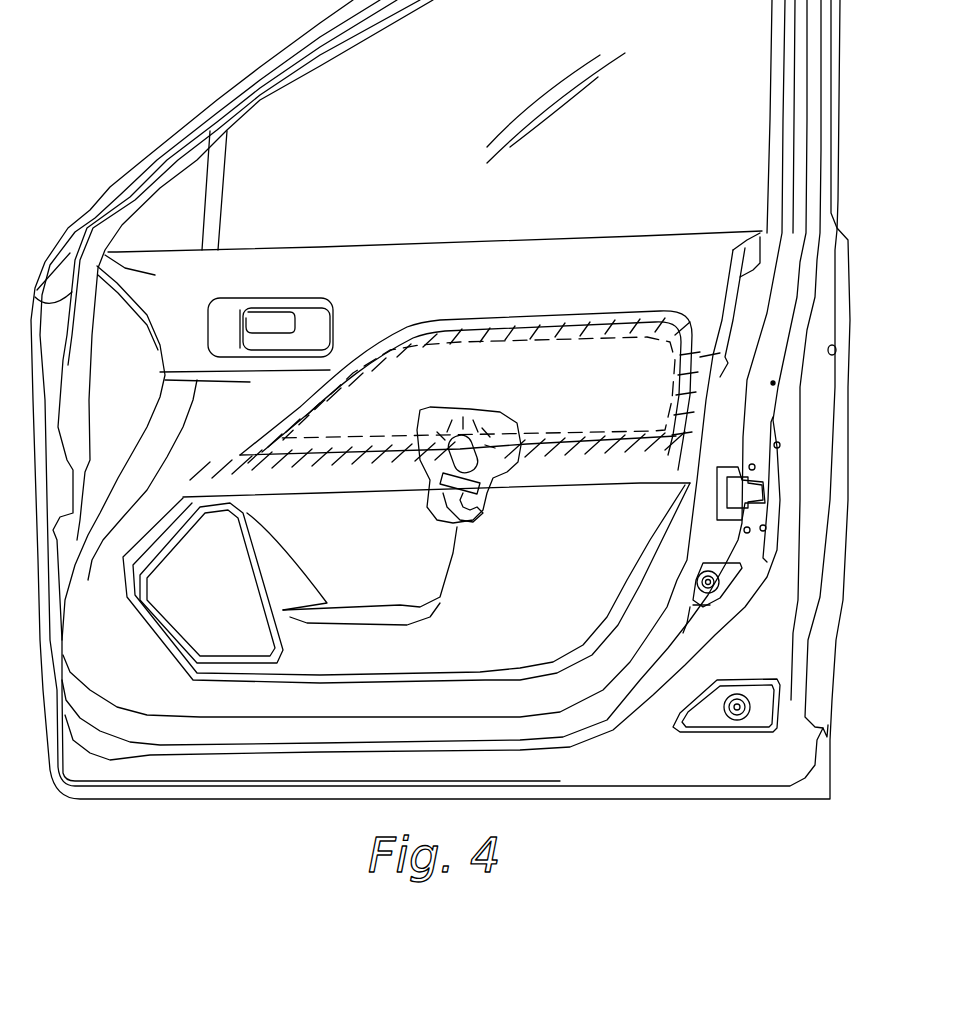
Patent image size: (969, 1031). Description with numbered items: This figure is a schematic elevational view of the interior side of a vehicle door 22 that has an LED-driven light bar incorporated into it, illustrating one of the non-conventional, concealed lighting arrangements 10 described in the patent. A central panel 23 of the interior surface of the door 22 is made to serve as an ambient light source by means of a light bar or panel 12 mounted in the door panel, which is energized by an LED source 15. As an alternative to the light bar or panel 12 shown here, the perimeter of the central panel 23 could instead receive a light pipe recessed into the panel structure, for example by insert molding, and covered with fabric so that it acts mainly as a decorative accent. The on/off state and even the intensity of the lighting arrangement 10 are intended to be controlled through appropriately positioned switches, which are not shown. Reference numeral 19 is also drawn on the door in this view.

The lighting arrangement 10 is at (407, 267).
The light bar or panel 12 is at (537, 377).
The LED source 15 is at (488, 459).
The door trim panel 19 is at (663, 260).
The door 22 is at (565, 620).
The central panel 23 is at (650, 407).